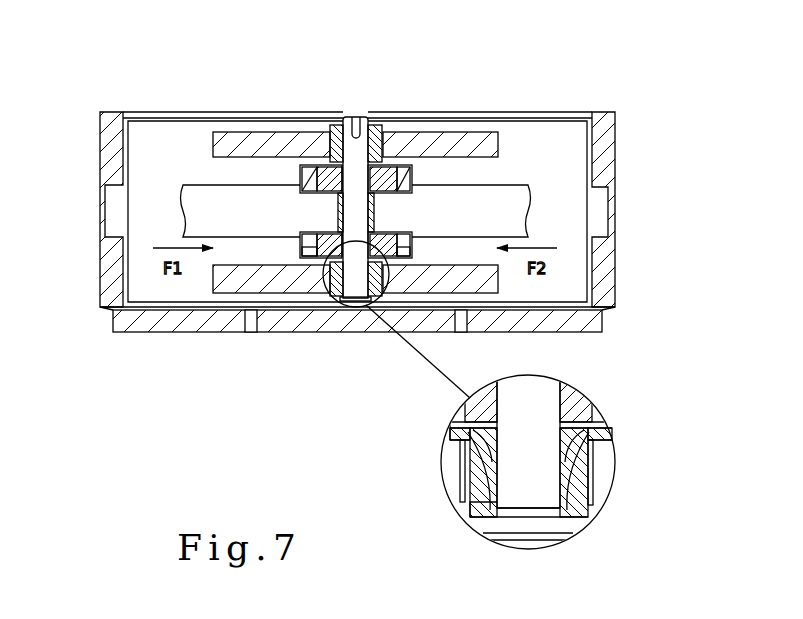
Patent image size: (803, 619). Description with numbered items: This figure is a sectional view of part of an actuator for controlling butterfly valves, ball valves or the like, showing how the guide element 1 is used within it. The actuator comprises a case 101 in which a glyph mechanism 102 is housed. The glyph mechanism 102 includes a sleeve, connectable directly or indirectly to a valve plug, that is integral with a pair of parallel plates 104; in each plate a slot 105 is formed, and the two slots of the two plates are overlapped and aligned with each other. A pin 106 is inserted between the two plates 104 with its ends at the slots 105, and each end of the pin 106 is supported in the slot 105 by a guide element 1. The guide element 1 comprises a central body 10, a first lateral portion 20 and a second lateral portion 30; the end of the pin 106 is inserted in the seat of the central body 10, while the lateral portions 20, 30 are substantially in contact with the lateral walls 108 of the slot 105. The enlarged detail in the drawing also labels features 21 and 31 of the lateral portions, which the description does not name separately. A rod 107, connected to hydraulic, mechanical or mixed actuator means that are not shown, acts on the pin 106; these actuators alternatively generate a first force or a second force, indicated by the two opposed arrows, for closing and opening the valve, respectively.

The guide element 1 is at (336, 126).
The central body 10 is at (566, 525).
The first lateral portion 20 is at (587, 433).
The ring lip 21 is at (592, 468).
The second lateral portion 30 is at (458, 433).
The sleeve strip 31 is at (460, 458).
The case 101 is at (605, 143).
The glyph mechanism 102 is at (197, 146).
The parallel plates 104 is at (475, 133).
The slot 105 is at (330, 140).
The pin 106 is at (357, 118).
The rod 107 is at (190, 213).
The lateral walls 108 is at (460, 502).